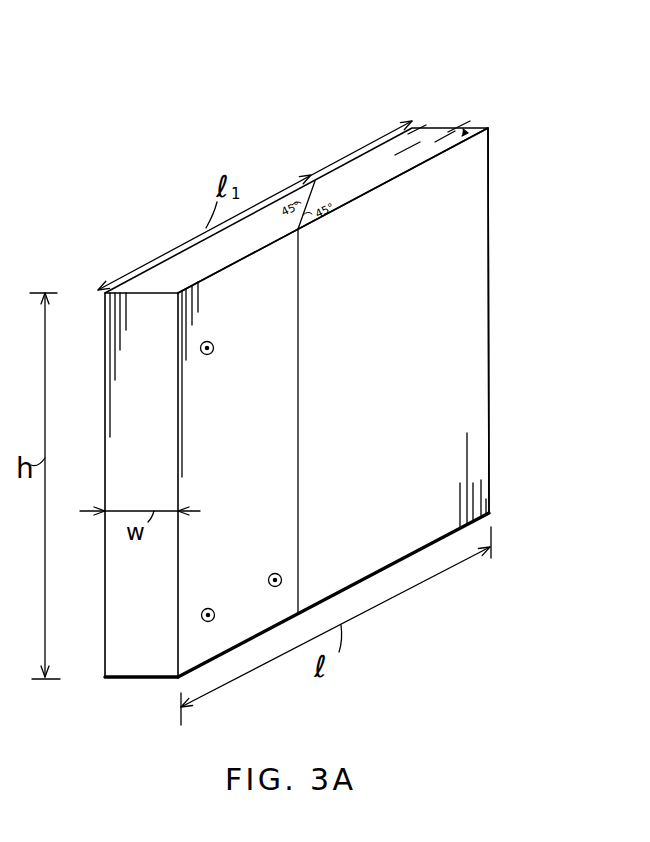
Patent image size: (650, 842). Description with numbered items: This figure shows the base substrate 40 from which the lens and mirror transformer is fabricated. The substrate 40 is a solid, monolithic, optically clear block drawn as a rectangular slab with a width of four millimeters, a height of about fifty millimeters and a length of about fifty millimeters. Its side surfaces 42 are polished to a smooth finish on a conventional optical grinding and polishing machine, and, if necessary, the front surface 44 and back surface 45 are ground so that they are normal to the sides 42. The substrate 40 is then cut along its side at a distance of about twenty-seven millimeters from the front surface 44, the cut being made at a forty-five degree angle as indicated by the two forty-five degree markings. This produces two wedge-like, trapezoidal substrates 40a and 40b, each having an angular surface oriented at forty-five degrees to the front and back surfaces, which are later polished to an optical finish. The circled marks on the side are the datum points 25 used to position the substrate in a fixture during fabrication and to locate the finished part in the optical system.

The base substrate 40 is at (535, 117).
The trapezoidal substrate 40a is at (270, 420).
The trapezoidal substrate 40b is at (418, 377).
The side surface 42 is at (484, 409).
The front surface 44 is at (141, 663).
The back surface 45 is at (451, 128).
The datum points 25 is at (214, 343).